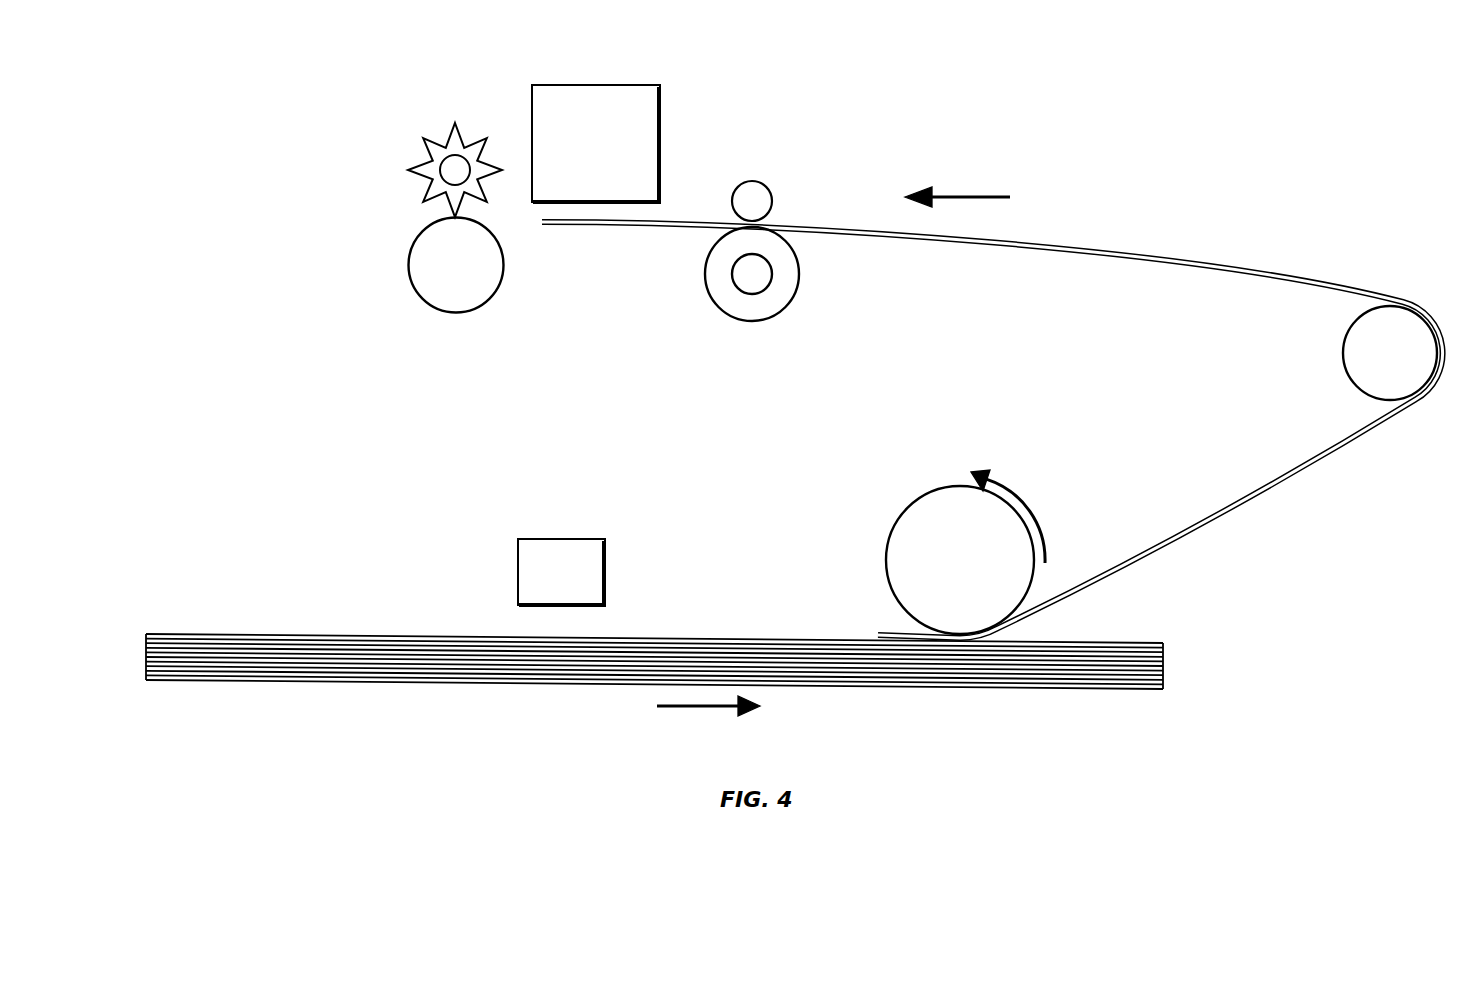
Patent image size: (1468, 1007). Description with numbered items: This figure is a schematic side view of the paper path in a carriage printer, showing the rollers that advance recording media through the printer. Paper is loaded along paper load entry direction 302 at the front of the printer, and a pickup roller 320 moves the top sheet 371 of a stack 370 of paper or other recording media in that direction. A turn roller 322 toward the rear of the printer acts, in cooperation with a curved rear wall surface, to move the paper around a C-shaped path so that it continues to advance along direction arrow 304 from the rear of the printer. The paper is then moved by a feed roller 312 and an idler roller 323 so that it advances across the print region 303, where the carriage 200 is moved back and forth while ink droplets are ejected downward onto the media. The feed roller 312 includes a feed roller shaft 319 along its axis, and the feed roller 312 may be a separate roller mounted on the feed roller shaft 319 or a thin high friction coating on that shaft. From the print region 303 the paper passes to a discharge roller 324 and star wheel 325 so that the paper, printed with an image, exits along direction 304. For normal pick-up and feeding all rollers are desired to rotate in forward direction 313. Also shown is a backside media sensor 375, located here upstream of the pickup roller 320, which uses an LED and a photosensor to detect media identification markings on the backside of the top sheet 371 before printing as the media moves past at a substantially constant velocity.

The carriage 200 is at (593, 83).
The print region 303 is at (656, 213).
The direction arrow 304 is at (962, 194).
The feed roller 312 is at (800, 284).
The forward direction 313 is at (1022, 498).
The feed roller shaft 319 is at (733, 279).
The pickup roller 320 is at (898, 512).
The turn roller 322 is at (1343, 361).
The idler roller 323 is at (756, 183).
The discharge roller 324 is at (404, 274).
The star wheel 325 is at (447, 141).
The paper load entry direction 302 is at (700, 708).
The stack 370 is at (1177, 669).
The top sheet 371 is at (1212, 520).
The backside media sensor 375 is at (558, 538).